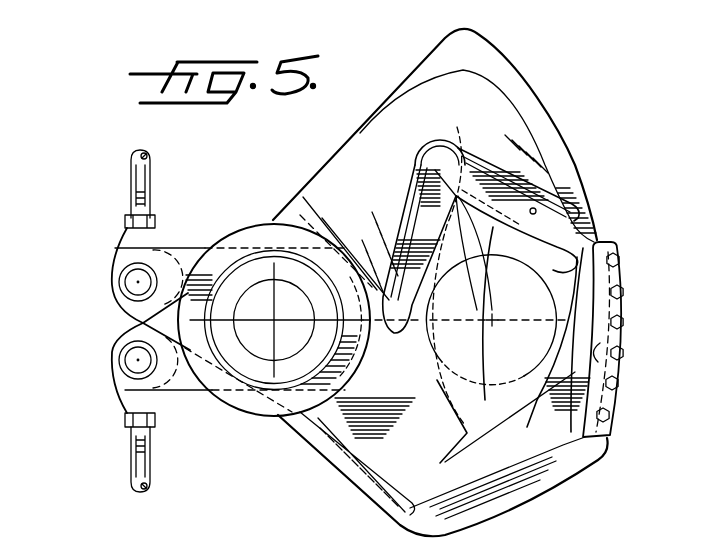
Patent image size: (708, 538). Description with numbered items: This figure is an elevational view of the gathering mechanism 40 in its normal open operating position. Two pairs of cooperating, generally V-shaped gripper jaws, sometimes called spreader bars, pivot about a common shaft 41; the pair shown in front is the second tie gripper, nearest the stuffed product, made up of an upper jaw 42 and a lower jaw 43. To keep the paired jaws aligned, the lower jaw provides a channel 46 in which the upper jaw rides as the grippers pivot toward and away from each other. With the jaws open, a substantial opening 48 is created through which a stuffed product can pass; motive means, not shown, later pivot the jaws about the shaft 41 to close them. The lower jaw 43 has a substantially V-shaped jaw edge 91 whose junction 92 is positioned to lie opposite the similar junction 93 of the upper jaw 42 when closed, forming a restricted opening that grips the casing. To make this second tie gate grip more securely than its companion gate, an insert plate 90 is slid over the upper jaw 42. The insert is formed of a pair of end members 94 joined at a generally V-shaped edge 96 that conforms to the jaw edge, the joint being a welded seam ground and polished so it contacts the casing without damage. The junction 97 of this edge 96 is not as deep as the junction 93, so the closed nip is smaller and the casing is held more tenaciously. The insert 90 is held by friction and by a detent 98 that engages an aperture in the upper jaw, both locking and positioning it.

The gathering mechanism 40 is at (105, 294).
The common shaft 41 is at (253, 283).
The upper jaw 42 is at (548, 117).
The lower jaw 43 is at (557, 443).
The channel 46 is at (603, 338).
The opening 48 is at (600, 228).
The insert plate 90 is at (415, 172).
The jaw edge 91 is at (498, 400).
The junction 92 is at (453, 447).
The junction 93 is at (498, 266).
The end member 94 is at (410, 217).
The V-shaped edge 96 is at (530, 268).
The junction 97 is at (469, 253).
The detent 98 is at (537, 210).